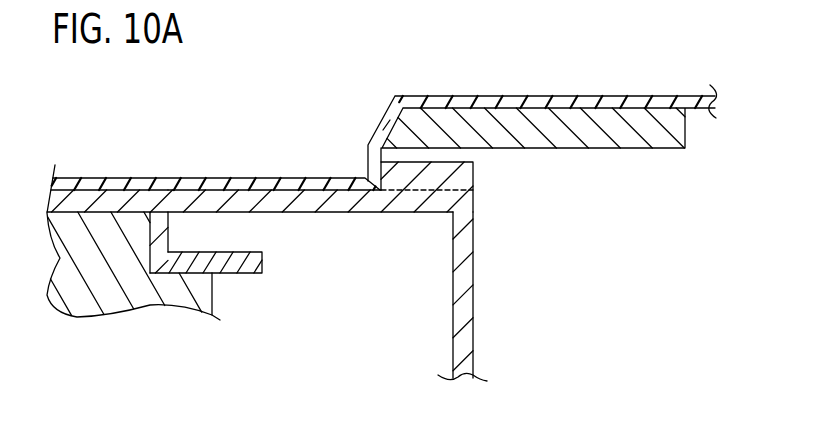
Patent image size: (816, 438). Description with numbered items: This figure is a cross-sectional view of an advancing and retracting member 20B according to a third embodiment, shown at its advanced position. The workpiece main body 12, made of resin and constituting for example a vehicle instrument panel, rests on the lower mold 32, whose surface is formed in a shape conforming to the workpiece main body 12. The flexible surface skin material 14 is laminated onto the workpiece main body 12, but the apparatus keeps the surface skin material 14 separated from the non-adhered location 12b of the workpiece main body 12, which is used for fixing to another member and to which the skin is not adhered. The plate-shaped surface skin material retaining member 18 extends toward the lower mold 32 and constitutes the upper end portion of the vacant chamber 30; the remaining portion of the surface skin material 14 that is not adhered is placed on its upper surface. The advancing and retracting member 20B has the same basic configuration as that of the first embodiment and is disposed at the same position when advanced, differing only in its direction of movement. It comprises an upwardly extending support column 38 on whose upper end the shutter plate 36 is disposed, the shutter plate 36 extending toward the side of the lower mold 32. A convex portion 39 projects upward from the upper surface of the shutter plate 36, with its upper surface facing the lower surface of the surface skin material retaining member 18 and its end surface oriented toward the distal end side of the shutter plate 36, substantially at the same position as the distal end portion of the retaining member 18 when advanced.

The workpiece main body 12 is at (165, 225).
The non-adhered location 12b is at (235, 273).
The surface skin material 14 is at (142, 185).
The surface skin material retaining member 18 is at (558, 122).
The advancing and retracting member 20B is at (368, 271).
The vacant chamber 30 is at (380, 350).
The lower mold 32 is at (112, 300).
The shutter plate 36 is at (290, 198).
The support column 38 is at (463, 250).
The convex portion 39 is at (408, 173).